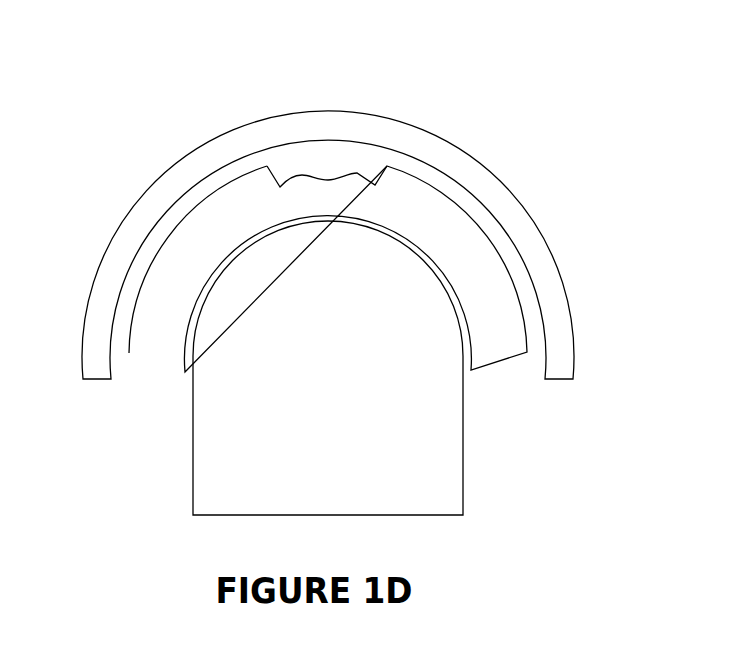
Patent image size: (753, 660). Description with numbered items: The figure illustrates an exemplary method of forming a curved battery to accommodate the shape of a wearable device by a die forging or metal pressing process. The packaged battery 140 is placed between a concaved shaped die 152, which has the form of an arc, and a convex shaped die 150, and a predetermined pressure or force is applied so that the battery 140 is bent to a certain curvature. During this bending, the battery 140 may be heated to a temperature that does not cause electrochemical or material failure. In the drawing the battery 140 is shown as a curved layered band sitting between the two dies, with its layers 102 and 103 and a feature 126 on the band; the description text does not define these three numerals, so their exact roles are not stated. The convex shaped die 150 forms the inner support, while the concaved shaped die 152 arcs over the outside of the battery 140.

The first layer of ring 102 is at (325, 211).
The second layer of ring 103 is at (353, 211).
The notch 126 is at (366, 160).
The battery 140 is at (348, 282).
The convex shaped die 150 is at (328, 368).
The concaved shaped die 152 is at (548, 272).